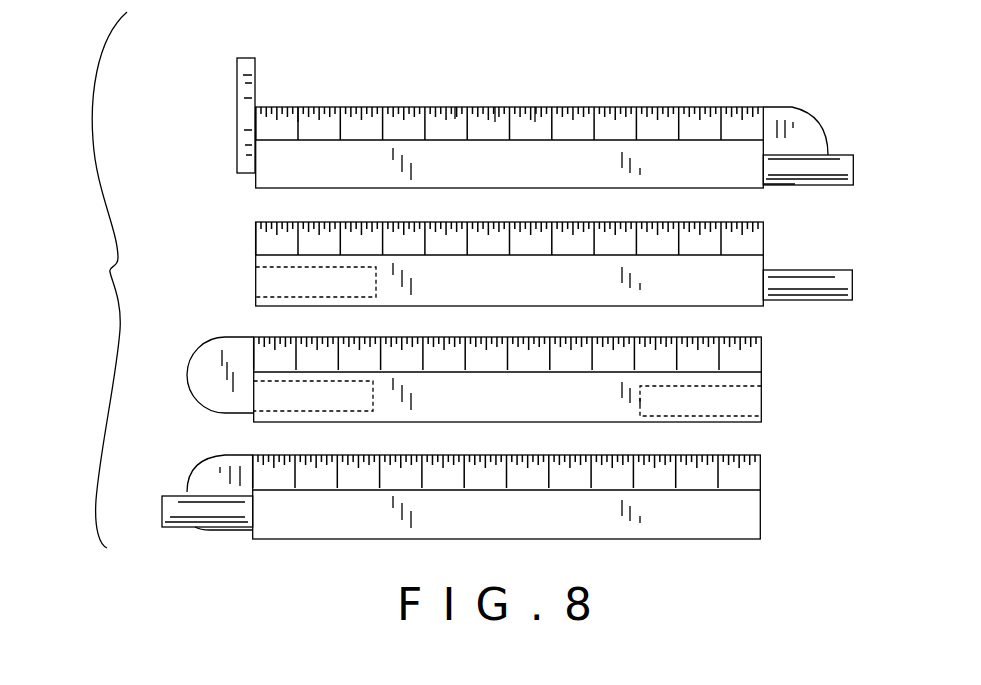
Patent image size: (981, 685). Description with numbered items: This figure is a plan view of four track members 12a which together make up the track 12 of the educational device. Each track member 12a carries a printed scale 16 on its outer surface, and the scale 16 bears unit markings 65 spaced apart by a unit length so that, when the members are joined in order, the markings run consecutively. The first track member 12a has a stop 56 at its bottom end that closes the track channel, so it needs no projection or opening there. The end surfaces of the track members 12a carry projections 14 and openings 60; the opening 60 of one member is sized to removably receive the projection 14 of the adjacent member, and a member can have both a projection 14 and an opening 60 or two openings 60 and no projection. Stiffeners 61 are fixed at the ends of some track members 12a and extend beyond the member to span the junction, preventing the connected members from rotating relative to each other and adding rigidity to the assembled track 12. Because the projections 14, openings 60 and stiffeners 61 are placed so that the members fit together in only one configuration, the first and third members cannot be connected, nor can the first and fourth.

The track 12 is at (87, 280).
The track member 12a is at (657, 103).
The projection 14 is at (842, 155).
The scale 16 is at (318, 105).
The stop 56 is at (246, 58).
The opening 60 is at (292, 267).
The stiffener 61 is at (780, 107).
The unit markings 65 is at (535, 124).